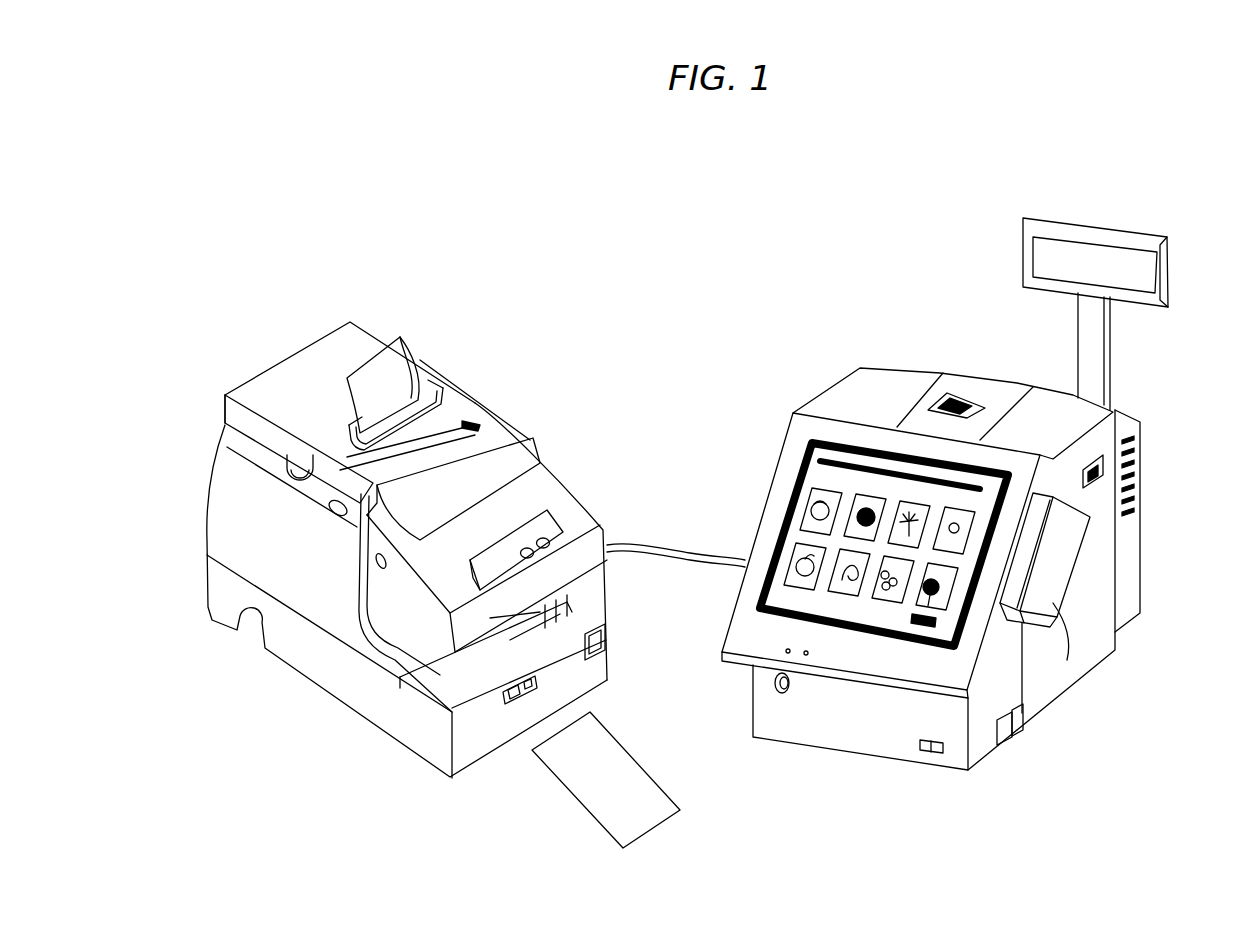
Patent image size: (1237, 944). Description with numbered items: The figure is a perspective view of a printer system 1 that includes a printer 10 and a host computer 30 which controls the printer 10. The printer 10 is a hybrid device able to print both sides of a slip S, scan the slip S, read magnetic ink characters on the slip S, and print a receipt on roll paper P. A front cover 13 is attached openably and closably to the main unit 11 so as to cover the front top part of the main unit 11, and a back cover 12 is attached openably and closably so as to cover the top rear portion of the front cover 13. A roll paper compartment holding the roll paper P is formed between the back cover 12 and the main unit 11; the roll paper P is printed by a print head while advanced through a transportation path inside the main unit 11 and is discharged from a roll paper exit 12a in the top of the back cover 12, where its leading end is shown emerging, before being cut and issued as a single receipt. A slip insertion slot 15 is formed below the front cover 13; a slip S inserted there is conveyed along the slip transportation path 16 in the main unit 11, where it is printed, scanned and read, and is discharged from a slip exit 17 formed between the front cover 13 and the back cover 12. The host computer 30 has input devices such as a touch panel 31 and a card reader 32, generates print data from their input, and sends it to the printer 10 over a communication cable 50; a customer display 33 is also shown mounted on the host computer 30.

The printer system 1 is at (678, 278).
The printer 10 is at (361, 324).
The main unit 11 is at (263, 553).
The back cover 12 is at (288, 372).
The roll paper exit 12a is at (425, 406).
The front cover 13 is at (563, 483).
The slip insertion slot 15 is at (480, 648).
The slip transportation path 16 is at (352, 610).
The slip exit 17 is at (466, 428).
The host computer 30 is at (1142, 440).
The touch panel 31 is at (875, 605).
The card reader 32 is at (1053, 605).
The customer display 33 is at (1090, 225).
The communication cable 50 is at (668, 548).
The roll paper P is at (401, 357).
The slip S is at (628, 765).